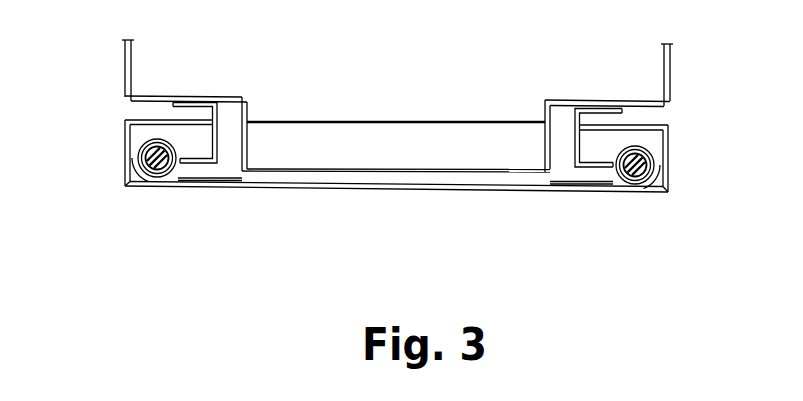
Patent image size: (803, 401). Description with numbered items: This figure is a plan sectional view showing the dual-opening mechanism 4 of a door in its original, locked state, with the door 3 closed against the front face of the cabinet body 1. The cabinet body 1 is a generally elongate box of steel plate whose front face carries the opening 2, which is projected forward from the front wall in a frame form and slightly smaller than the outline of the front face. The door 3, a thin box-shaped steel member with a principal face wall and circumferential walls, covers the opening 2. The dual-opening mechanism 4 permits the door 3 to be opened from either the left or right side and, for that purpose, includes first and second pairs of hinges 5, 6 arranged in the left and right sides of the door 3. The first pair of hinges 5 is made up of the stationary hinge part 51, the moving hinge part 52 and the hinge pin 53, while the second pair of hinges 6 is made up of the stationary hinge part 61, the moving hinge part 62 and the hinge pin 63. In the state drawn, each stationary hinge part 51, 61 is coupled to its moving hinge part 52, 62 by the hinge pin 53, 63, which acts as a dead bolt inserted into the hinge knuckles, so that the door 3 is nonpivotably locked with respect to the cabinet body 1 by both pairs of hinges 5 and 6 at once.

The cabinet body 1 is at (686, 72).
The opening 2 is at (390, 155).
The door 3 is at (511, 205).
The dual-opening mechanism 4 is at (130, 224).
The first pair of hinges 5 is at (95, 198).
The second pair of hinges 6 is at (681, 206).
The first stationary hinge part 51 is at (219, 142).
The first moving hinge part 52 is at (183, 179).
The first hinge pin 53 is at (143, 153).
The second stationary hinge part 61 is at (577, 133).
The second moving hinge part 62 is at (605, 186).
The second hinge pin 63 is at (653, 157).